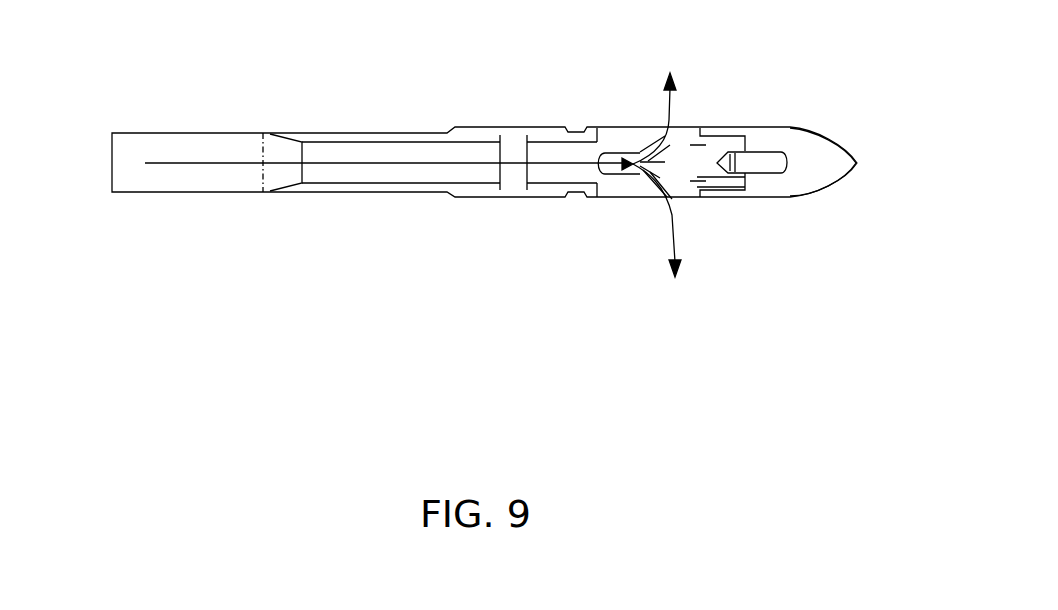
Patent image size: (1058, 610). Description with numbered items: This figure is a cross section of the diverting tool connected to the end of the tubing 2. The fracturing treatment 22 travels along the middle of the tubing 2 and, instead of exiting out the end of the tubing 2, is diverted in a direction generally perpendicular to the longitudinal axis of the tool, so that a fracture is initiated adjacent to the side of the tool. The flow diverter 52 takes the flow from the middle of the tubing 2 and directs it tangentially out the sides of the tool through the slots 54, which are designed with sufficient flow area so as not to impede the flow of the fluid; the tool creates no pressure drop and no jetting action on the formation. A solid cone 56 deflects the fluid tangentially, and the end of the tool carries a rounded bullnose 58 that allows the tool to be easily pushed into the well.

The tubing 2 is at (155, 130).
The fracturing treatment 22 is at (226, 163).
The flow diverter 52 is at (638, 137).
The slots 54 is at (645, 170).
The solid cone 56 is at (672, 160).
The rounded bullnose 58 is at (808, 153).